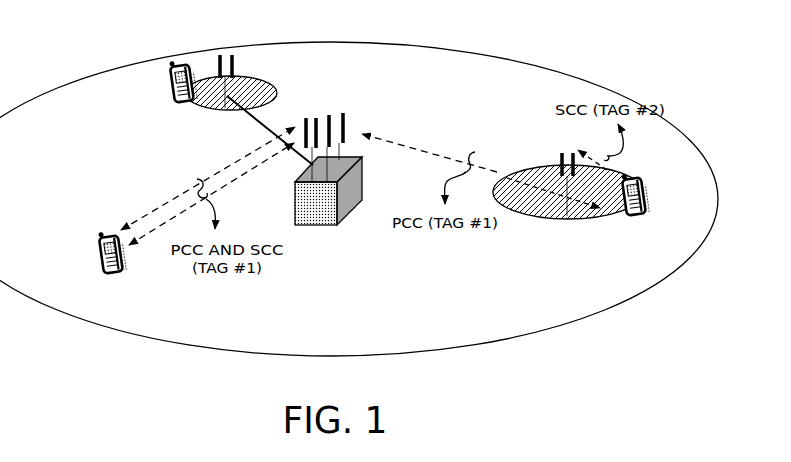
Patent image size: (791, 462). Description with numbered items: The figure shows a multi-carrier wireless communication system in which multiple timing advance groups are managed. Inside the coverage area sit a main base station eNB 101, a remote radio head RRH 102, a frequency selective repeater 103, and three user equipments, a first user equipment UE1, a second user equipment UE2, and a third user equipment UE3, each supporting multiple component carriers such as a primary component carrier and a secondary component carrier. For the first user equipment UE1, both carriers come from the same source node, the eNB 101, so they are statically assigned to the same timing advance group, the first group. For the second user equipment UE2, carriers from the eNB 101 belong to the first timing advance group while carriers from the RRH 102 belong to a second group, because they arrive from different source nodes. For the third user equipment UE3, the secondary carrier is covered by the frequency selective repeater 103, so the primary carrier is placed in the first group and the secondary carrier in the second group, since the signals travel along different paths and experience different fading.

The main base station eNB 101 is at (319, 226).
The remote radio head RRH 102 is at (231, 94).
The frequency selective repeater 103 is at (568, 193).
The first user equipment UE1 is at (109, 262).
The second user equipment UE2 is at (167, 80).
The third user equipment UE3 is at (635, 204).